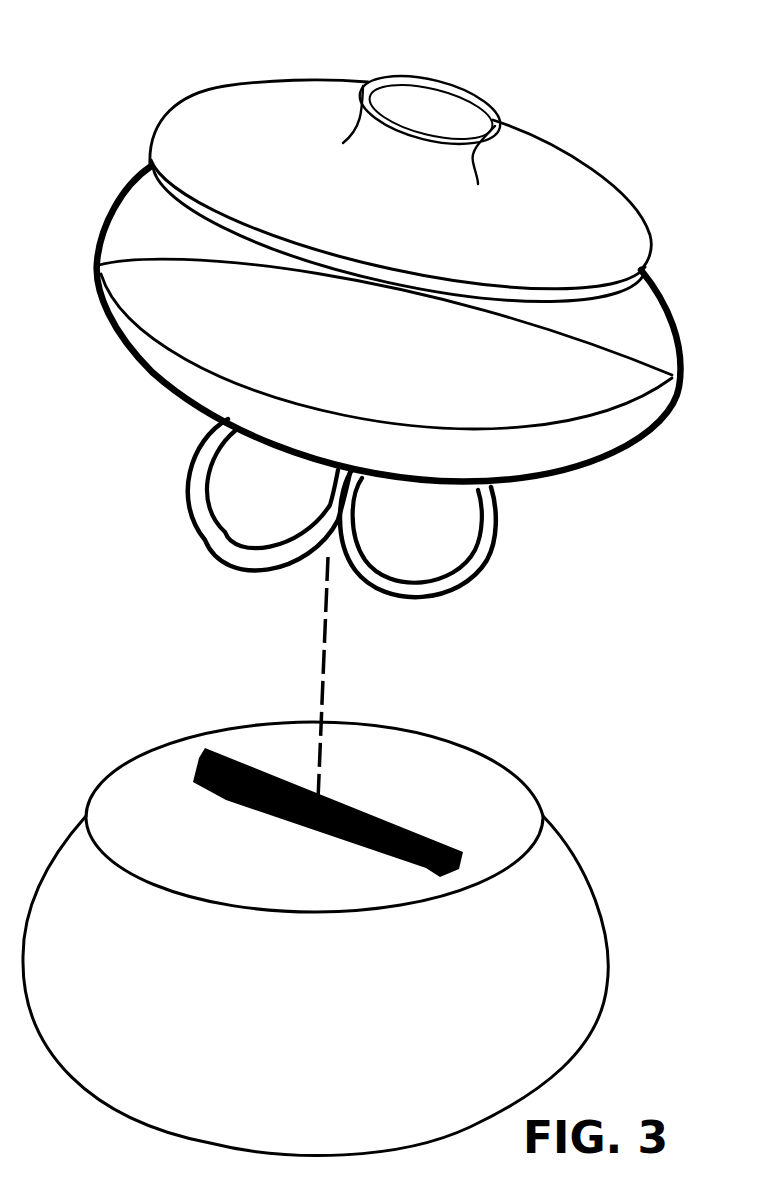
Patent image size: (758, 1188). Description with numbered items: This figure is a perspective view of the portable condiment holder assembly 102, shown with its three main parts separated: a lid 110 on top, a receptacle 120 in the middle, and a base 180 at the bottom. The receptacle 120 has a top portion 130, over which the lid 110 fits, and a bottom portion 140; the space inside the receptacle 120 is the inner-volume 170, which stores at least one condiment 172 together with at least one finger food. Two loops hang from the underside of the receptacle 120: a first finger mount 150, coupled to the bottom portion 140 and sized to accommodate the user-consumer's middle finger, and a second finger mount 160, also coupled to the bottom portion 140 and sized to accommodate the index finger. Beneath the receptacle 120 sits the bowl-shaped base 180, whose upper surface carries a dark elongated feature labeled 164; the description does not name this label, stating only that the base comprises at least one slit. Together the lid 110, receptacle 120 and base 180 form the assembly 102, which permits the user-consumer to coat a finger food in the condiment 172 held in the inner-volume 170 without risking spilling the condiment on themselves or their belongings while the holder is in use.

The portable condiment holder assembly 102 is at (357, 412).
The lid 110 is at (589, 191).
The receptacle 120 is at (134, 168).
The top portion 130 is at (135, 222).
The bottom portion 140 is at (189, 372).
The first finger mount 150 is at (196, 521).
The second finger mount 160 is at (505, 533).
The slot 164 is at (396, 816).
The inner-volume 170 is at (392, 355).
The condiment 172 is at (243, 581).
The base 180 is at (344, 929).